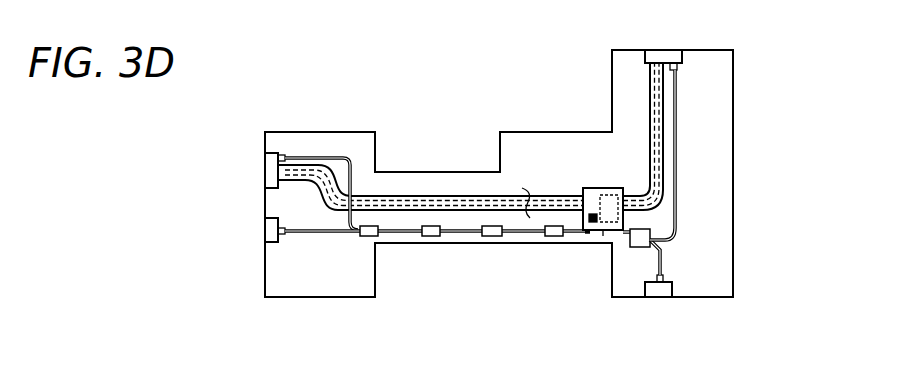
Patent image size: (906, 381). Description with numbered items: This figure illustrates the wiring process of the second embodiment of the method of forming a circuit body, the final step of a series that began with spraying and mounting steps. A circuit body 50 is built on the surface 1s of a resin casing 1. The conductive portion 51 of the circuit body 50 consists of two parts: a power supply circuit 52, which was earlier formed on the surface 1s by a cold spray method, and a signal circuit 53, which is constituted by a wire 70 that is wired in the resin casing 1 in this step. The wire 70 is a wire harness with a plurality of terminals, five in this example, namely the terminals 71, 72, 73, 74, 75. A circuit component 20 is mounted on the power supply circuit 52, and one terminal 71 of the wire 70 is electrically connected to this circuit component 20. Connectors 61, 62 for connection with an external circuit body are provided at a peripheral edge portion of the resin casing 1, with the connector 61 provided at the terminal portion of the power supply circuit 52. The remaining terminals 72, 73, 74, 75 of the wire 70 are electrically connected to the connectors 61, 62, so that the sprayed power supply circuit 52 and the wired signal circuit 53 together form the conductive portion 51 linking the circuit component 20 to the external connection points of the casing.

The resin casing 1 is at (512, 132).
The surface 1s is at (508, 156).
The circuit component 20 is at (603, 188).
The circuit body 50 is at (683, 178).
The conductive portion 51 is at (470, 133).
The power supply circuit 52 is at (533, 185).
The signal circuit 53 is at (437, 261).
The connector 61 is at (265, 170).
The connector 62 is at (265, 228).
The wire 70 is at (468, 243).
The terminal 71 is at (572, 185).
The terminal 72 is at (283, 157).
The terminal 73 is at (283, 240).
The terminal 74 is at (662, 278).
The terminal 75 is at (680, 66).